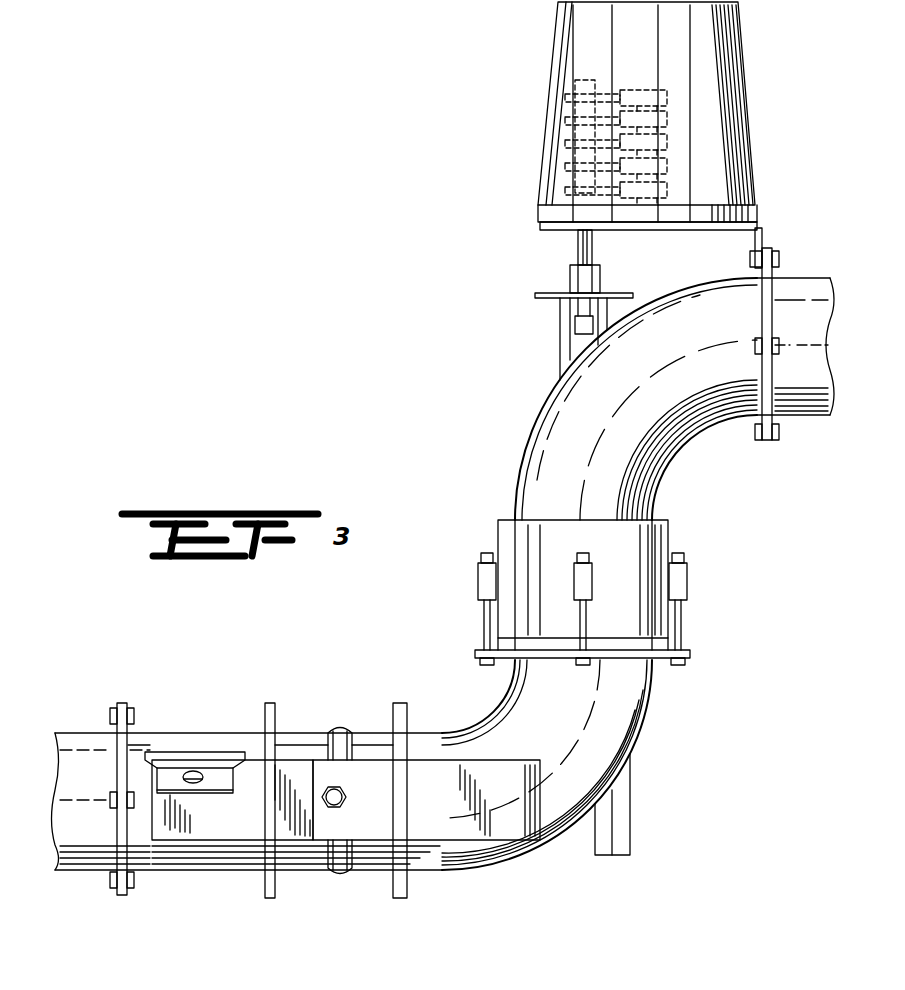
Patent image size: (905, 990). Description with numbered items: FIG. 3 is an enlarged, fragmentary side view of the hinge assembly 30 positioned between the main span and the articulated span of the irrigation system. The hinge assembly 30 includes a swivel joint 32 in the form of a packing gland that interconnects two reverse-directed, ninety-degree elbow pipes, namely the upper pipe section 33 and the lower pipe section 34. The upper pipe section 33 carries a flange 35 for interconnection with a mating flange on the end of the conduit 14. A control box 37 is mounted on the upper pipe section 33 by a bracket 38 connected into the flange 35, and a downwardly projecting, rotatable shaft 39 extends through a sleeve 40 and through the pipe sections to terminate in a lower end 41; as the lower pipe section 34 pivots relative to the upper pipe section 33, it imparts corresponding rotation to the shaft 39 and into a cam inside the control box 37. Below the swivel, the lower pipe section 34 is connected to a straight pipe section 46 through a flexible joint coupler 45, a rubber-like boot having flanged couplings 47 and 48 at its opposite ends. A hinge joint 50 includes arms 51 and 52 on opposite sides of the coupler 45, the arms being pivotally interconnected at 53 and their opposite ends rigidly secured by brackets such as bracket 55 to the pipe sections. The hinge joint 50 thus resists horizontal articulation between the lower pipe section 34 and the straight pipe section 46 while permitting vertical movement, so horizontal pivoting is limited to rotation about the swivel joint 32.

The conduit 14 is at (815, 415).
The hinge assembly 30 is at (462, 632).
The swivel joint 32 is at (668, 542).
The upper pipe section 33 is at (533, 432).
The lower pipe section 34 is at (648, 708).
The flange 35 is at (766, 440).
The control box 37 is at (558, 118).
The bracket 38 is at (762, 236).
The rotatable shaft 39 is at (578, 243).
The sleeve 40 is at (560, 332).
The lower end 41 is at (632, 806).
The flexible joint coupler 45 is at (298, 727).
The straight pipe section 46 is at (195, 733).
The flanged coupling 47 is at (400, 705).
The flanged coupling 48 is at (268, 710).
The hinge joint 50 is at (348, 845).
The arm 51 is at (290, 840).
The arm 52 is at (482, 828).
The pivotal connection 53 is at (348, 797).
The bracket 55 is at (200, 840).